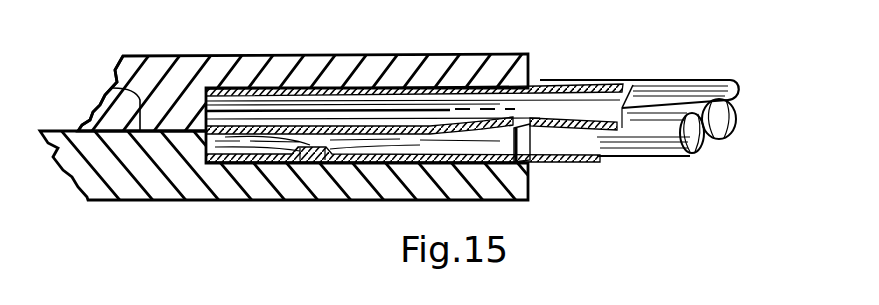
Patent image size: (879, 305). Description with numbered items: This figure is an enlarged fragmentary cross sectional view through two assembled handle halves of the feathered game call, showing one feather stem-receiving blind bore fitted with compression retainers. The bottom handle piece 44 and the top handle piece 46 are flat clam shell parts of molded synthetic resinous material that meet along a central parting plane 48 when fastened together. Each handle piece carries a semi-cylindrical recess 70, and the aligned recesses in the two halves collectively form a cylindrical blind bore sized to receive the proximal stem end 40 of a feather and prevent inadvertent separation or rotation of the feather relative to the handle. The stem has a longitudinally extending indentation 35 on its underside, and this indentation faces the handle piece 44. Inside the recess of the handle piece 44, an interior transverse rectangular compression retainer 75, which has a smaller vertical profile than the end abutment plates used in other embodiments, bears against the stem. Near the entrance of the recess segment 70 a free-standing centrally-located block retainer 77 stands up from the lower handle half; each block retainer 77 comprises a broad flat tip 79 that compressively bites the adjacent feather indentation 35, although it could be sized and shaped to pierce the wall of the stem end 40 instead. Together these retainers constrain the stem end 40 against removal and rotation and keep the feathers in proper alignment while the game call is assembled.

The longitudinally extending indentation 35 is at (716, 147).
The proximal stem end 40 is at (667, 100).
The handle piece 44 is at (222, 213).
The handle piece 46 is at (258, 52).
The central parting plane 48 is at (117, 90).
The semi-cylindrical recess 70 is at (335, 105).
The interior transverse rectangular compression retainer 75 is at (322, 152).
The free-standing centrally-located block retainer 77 is at (545, 160).
The broad flat tip 79 is at (548, 85).